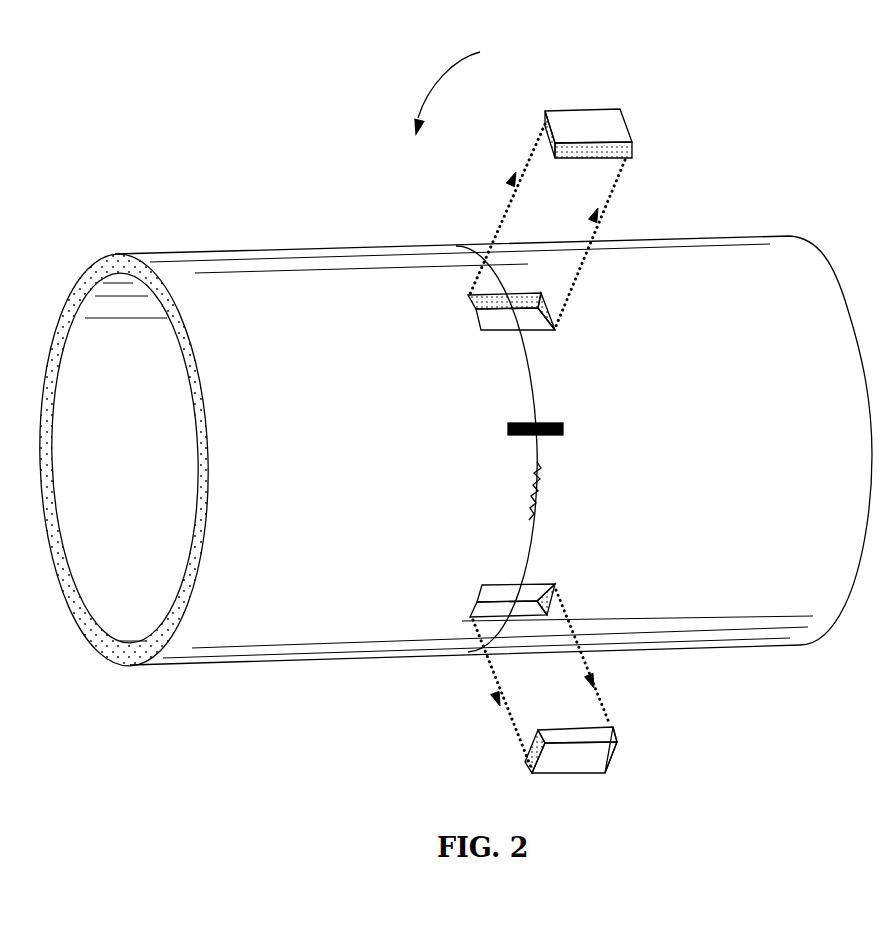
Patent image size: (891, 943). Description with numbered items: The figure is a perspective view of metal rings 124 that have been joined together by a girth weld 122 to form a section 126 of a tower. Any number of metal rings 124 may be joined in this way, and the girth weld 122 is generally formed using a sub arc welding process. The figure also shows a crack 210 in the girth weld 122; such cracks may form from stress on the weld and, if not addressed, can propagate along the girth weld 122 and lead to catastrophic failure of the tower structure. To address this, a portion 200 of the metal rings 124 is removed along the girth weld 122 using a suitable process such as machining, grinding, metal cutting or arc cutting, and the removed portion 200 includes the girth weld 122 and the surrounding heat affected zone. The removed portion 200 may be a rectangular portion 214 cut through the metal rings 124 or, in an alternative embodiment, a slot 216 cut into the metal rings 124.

The girth weld 122 is at (534, 387).
The metal rings 124 is at (338, 522).
The section 126 is at (472, 83).
The removed portion 200 is at (625, 123).
The crack 210 is at (537, 503).
The rectangular portion 214 is at (557, 329).
The slot 216 is at (563, 430).